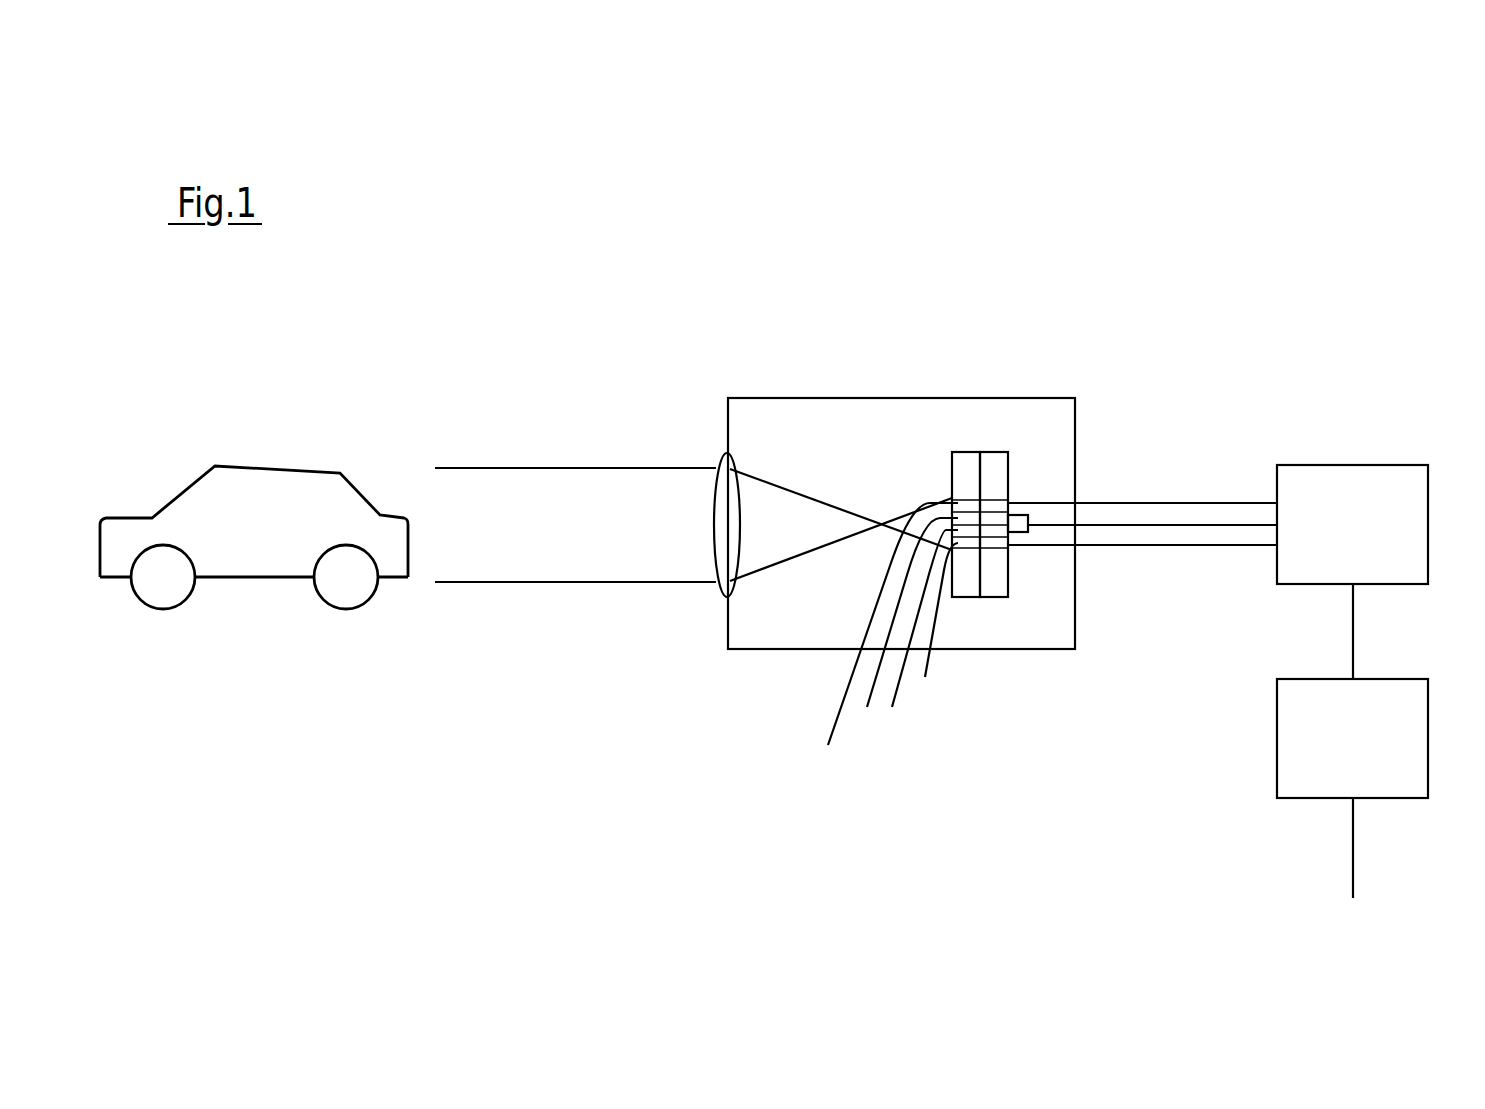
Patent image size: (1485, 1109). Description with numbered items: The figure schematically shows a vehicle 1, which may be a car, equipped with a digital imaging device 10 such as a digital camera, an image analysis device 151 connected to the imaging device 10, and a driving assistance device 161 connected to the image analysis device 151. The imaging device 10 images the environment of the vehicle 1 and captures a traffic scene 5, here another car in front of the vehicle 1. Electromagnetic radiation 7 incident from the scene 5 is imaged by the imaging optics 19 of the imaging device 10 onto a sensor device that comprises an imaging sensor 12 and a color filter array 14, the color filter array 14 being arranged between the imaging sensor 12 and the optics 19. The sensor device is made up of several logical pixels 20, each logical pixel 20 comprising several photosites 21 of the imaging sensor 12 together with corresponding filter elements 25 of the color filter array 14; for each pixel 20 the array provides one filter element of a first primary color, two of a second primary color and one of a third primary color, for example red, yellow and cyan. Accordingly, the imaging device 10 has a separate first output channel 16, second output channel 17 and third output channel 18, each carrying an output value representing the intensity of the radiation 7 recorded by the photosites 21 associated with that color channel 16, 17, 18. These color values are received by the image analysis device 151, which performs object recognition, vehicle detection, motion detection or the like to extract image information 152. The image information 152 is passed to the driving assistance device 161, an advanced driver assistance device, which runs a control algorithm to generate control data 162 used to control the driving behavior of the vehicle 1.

The vehicle 1 is at (1263, 250).
The traffic scene 5 is at (390, 388).
The electromagnetic radiation 7 is at (590, 584).
The digital imaging device 10 is at (790, 650).
The imaging sensor 12 is at (985, 461).
The color filter array 14 is at (968, 452).
The first output channel 16 is at (1163, 503).
The second output channel 17 is at (1187, 525).
The third output channel 18 is at (1216, 545).
The imaging optics 19 is at (742, 520).
The logical pixel 20 is at (984, 586).
The photosite 21 is at (1005, 500).
The filter element 25 is at (885, 643).
The image analysis device 151 is at (1380, 535).
The image information 152 is at (1353, 650).
The driving assistance device 161 is at (1376, 749).
The control data 162 is at (1353, 848).